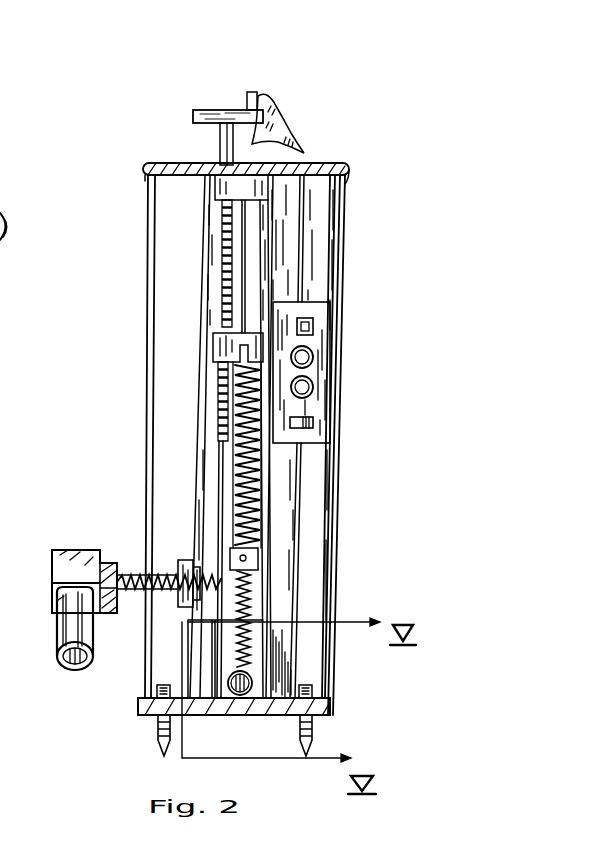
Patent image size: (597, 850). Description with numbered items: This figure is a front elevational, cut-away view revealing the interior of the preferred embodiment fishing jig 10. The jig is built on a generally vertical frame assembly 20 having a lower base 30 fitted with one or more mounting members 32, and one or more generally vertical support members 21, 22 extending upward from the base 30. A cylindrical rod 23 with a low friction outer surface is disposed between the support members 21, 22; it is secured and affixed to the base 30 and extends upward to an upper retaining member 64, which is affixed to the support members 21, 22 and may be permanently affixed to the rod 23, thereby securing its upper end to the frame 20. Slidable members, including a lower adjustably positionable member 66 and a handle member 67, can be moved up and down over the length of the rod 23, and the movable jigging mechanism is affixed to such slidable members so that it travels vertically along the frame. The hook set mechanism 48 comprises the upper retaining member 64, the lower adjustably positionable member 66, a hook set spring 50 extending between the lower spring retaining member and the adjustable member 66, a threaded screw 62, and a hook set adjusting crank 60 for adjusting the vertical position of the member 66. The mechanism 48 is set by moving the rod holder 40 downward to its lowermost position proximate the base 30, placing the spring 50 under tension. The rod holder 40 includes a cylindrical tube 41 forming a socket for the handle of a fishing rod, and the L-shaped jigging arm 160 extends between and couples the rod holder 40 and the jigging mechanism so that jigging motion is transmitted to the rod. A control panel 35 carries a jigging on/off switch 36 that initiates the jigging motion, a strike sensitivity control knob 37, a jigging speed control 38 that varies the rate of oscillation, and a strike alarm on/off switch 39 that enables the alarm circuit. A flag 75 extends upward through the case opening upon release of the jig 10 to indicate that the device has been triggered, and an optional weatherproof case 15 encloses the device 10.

The fishing jig 10 is at (25, 59).
The weatherproof case 15 is at (313, 161).
The frame assembly 20 is at (281, 631).
The vertical support member 21 is at (197, 647).
The vertical support member 22 is at (283, 597).
The cylindrical rod 23 is at (252, 240).
The lower base 30 is at (271, 716).
The mounting member 32 is at (313, 735).
The control panel 35 is at (346, 356).
The jigging on/off switch 36 is at (313, 319).
The strike sensitivity control knob 37 is at (308, 350).
The jigging speed control 38 is at (308, 386).
The strike alarm on/off switch 39 is at (314, 422).
The rod holder 40 is at (67, 546).
The tube 41 is at (68, 661).
The hook set mechanism 48 is at (226, 470).
The hook set spring 50 is at (255, 508).
The hook set adjusting crank 60 is at (202, 109).
The threaded screw 62 is at (220, 373).
The upper retaining member 64 is at (180, 163).
The lower adjustably positionable member 66 is at (220, 393).
The handle member 67 is at (252, 563).
The flag 75 is at (261, 100).
The jigging arm 160 is at (128, 572).